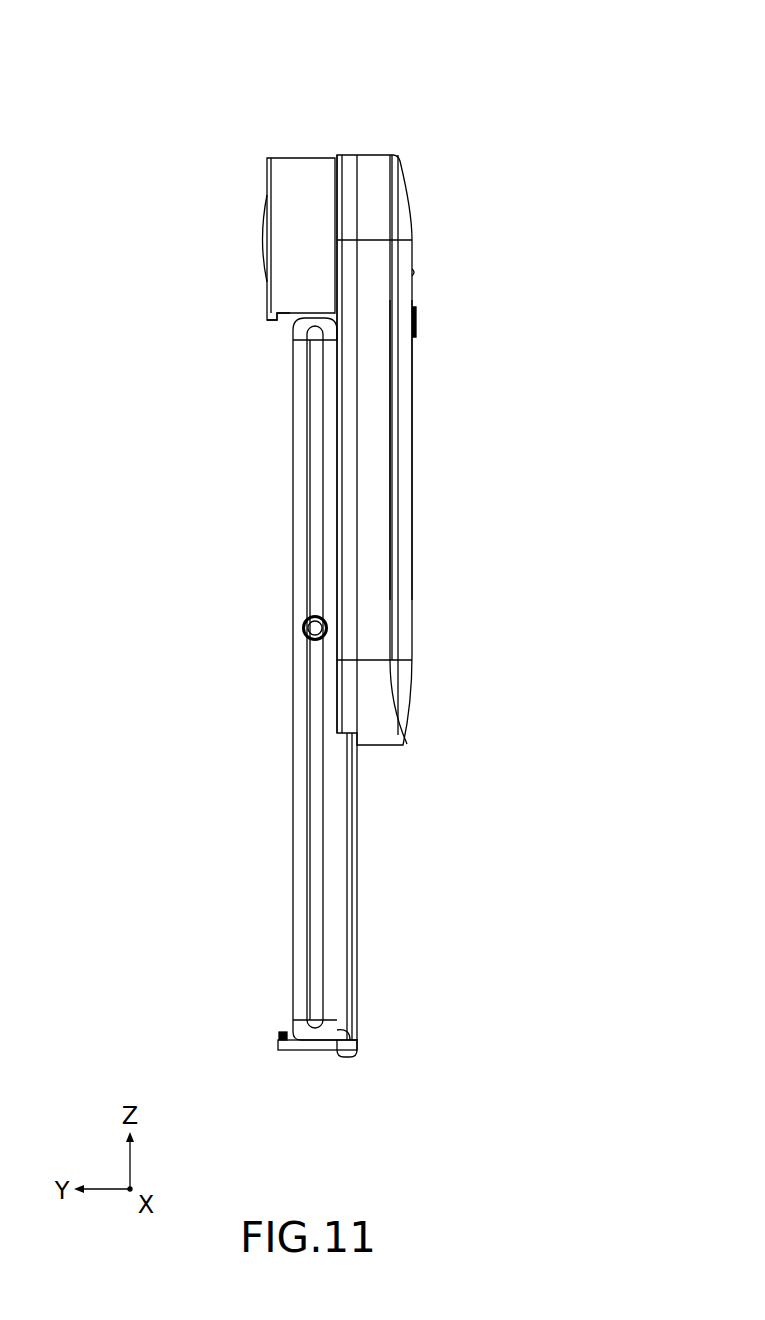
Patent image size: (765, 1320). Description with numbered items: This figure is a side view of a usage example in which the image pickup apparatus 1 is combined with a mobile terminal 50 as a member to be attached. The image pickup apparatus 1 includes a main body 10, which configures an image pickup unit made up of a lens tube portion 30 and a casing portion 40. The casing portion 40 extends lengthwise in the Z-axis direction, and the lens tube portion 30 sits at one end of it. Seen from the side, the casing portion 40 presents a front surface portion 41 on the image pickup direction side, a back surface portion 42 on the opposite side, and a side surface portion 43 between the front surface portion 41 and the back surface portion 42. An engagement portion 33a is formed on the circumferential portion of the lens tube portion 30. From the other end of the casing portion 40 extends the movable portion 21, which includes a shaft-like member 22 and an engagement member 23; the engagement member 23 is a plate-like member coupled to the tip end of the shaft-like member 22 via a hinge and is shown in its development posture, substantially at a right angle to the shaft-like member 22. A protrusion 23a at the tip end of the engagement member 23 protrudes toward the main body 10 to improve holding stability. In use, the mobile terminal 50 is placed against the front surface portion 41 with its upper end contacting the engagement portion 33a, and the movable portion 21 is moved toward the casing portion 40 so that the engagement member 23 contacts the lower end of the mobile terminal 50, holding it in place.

The image pickup apparatus 1 is at (491, 78).
The main body 10 is at (395, 77).
The lens tube portion 30 is at (305, 162).
The casing portion 40 is at (371, 162).
The engagement portion 33a is at (289, 325).
The front surface portion 41 is at (333, 518).
The back surface portion 42 is at (412, 523).
The side surface portion 43 is at (375, 584).
The mobile terminal 50 is at (281, 506).
The movable portion 21 is at (367, 979).
The shaft-like member 22 is at (358, 889).
The engagement member 23 is at (319, 1051).
The protrusion 23a is at (277, 1038).